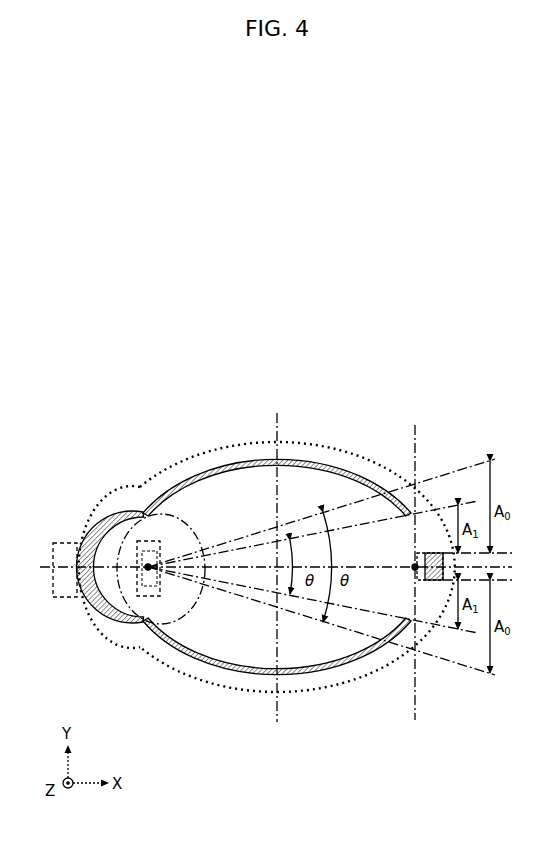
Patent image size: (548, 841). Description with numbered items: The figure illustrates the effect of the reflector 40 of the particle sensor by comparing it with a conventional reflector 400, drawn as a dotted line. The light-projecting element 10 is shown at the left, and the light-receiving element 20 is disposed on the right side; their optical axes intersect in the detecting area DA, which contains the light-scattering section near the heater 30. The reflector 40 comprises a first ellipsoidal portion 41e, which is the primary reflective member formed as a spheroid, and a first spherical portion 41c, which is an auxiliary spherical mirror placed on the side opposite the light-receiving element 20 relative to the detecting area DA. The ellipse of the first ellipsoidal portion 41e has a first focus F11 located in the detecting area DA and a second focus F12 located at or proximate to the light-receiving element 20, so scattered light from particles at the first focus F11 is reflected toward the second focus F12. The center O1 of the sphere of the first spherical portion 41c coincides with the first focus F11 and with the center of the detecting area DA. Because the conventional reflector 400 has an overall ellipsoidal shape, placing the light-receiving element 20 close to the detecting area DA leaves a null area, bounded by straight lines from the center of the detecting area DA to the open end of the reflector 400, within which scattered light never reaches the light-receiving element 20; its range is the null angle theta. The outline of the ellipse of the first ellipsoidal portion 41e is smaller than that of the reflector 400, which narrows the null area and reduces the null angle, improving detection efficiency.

The light-projecting element 10 is at (56, 597).
The light-receiving element 20 is at (438, 550).
The heater 30 is at (153, 593).
The reflector 40 is at (243, 527).
The first spherical portion 41c is at (115, 517).
The first ellipsoidal portion 41e is at (205, 470).
The conventional reflector 400 is at (311, 437).
The detecting area DA is at (126, 585).
The first focus F11 is at (150, 570).
The second focus F12 is at (415, 567).